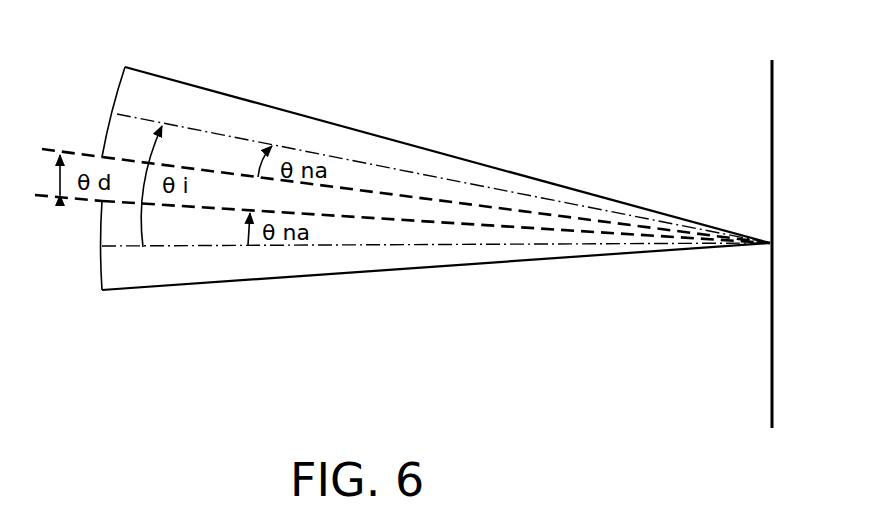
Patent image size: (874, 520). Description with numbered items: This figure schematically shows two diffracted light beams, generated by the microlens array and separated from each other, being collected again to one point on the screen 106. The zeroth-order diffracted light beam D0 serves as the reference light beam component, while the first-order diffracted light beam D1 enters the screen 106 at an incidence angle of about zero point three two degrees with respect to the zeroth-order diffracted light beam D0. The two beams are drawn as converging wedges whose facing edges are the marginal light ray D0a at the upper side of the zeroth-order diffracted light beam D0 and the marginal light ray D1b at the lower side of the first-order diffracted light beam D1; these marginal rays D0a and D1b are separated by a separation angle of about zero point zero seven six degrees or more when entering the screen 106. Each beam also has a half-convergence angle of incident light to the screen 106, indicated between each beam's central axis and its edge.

The first-order diffracted light beam D1 is at (249, 116).
The marginal light ray at lower side of first-order diffracted light beam D1b is at (368, 187).
The zeroth-order diffracted light beam D0 is at (214, 259).
The marginal light ray at upper side of zeroth-order diffracted light beam D0a is at (436, 227).
The screen 106 is at (764, 183).